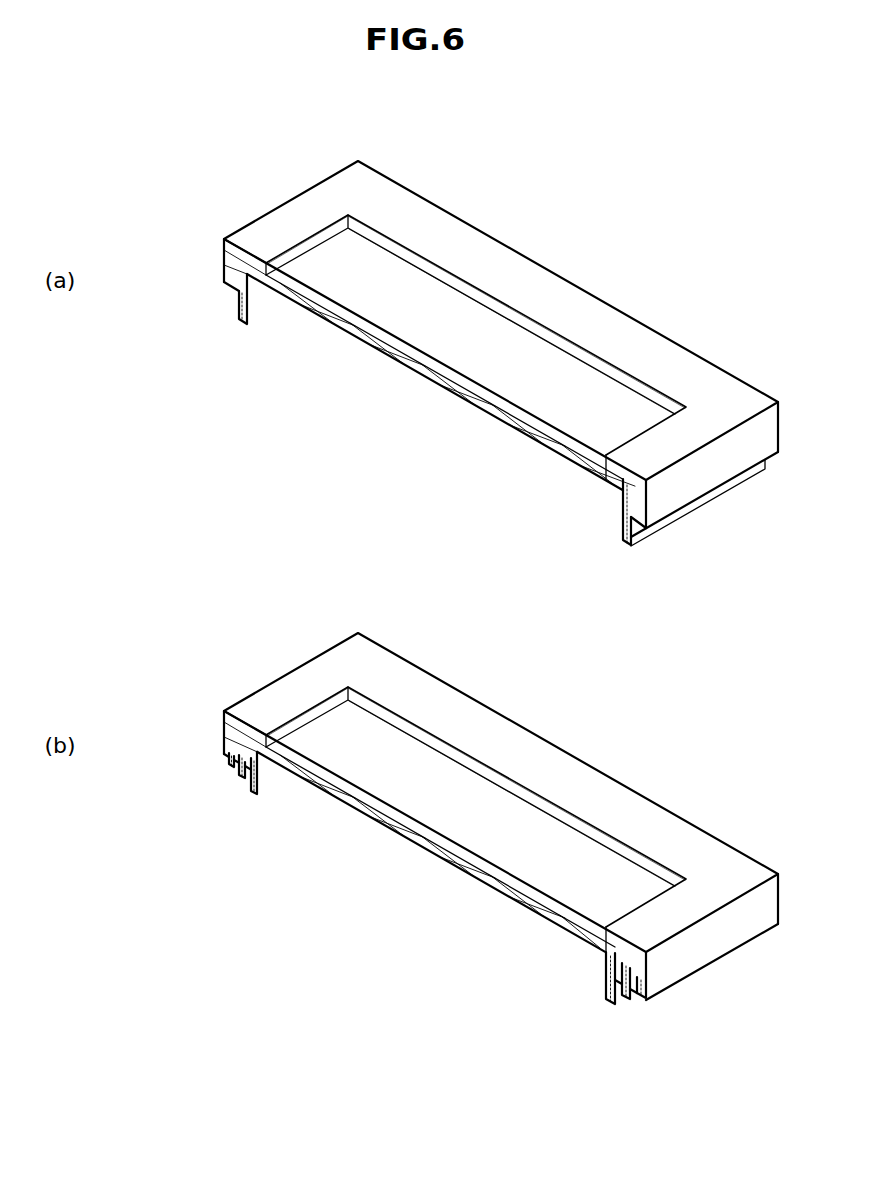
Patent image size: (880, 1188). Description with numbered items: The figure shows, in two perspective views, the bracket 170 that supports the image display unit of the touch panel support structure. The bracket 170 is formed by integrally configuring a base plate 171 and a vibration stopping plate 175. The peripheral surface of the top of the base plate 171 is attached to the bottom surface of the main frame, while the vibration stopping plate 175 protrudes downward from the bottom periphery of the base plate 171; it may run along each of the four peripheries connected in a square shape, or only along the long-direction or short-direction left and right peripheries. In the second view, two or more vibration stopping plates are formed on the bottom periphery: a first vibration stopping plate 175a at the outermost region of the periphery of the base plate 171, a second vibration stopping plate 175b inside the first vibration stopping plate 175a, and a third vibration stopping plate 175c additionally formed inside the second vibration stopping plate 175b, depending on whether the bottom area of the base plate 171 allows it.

The bracket 170 is at (598, 247).
The base plate 171 is at (465, 357).
The vibration stopping plate 175 is at (243, 326).
The first vibration stopping plate 175a is at (394, 875).
The second vibration stopping plate 175b is at (408, 877).
The third vibration stopping plate 175c is at (419, 878).